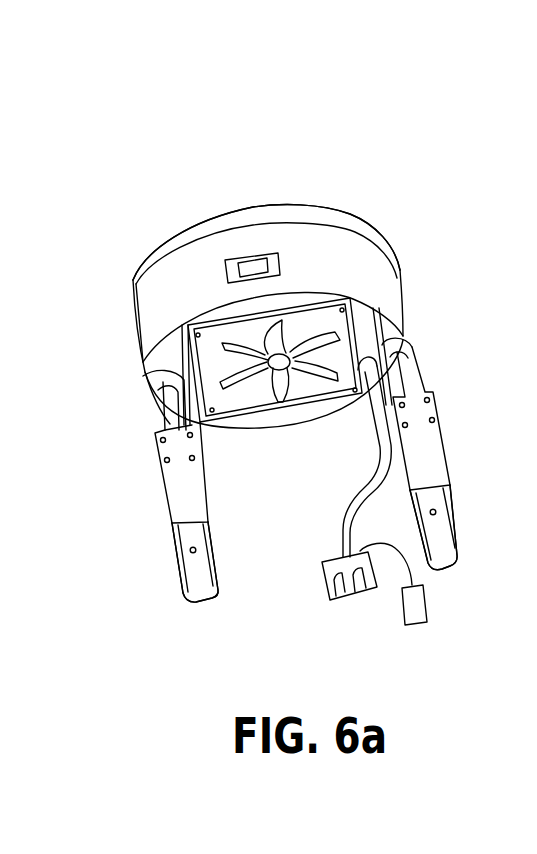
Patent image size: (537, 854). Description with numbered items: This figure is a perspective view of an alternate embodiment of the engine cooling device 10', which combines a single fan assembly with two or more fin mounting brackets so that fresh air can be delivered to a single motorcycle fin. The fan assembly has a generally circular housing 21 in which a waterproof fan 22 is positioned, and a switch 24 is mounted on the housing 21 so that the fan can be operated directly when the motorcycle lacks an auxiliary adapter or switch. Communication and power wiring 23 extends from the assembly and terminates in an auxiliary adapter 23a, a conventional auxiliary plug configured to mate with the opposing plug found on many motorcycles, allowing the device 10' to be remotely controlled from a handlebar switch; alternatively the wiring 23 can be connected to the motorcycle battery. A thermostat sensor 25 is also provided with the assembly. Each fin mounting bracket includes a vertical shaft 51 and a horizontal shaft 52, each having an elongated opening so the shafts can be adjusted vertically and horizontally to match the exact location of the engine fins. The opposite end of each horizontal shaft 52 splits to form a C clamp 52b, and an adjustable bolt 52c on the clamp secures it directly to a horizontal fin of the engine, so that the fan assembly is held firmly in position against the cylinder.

The cooling device 10' is at (295, 318).
The housing 21 is at (339, 267).
The waterproof fan 22 is at (315, 407).
The communication and power wiring 23 is at (347, 513).
The auxiliary adapter 23a is at (330, 568).
The switch 24 is at (253, 262).
The thermostat sensor 25 is at (418, 607).
The vertical shaft 51 is at (156, 374).
The horizontal shaft 52 is at (180, 485).
The C clamp 52b is at (198, 590).
The adjustable bolt 52c is at (190, 550).